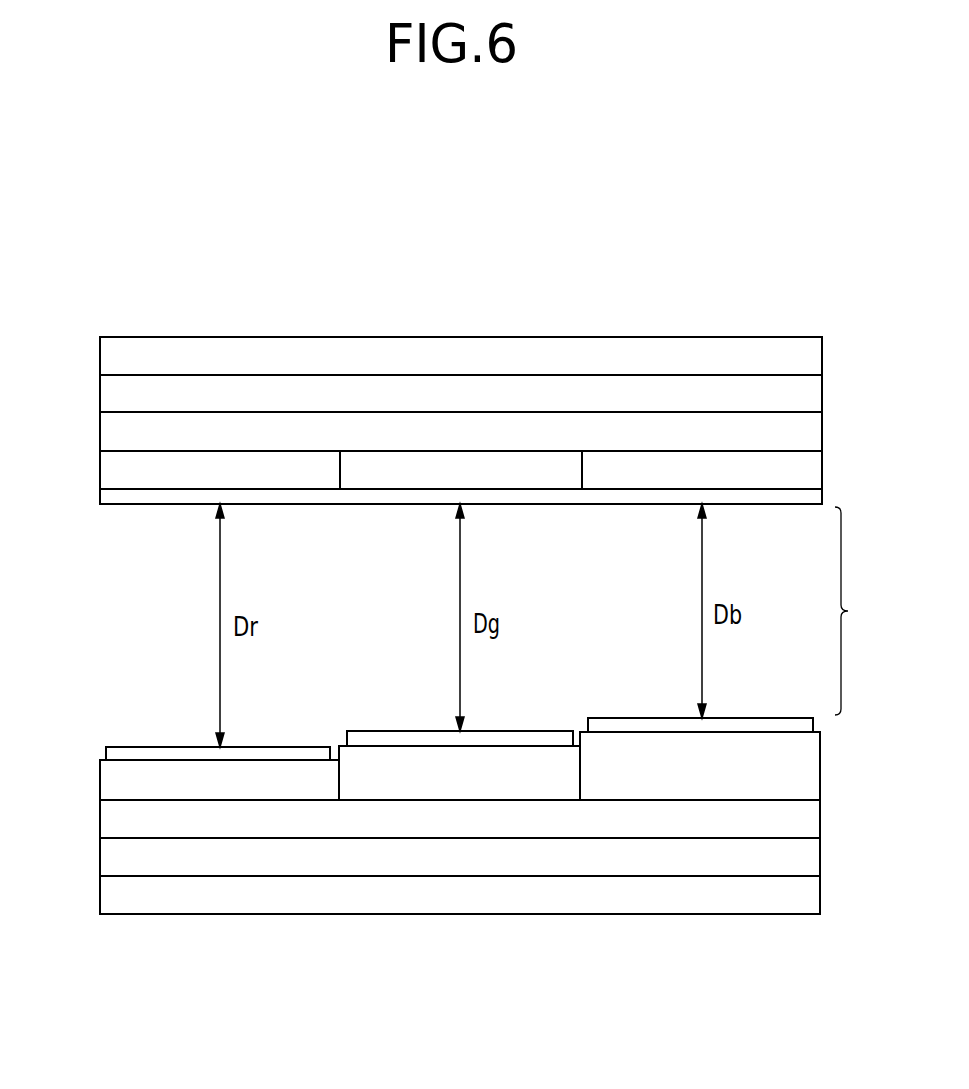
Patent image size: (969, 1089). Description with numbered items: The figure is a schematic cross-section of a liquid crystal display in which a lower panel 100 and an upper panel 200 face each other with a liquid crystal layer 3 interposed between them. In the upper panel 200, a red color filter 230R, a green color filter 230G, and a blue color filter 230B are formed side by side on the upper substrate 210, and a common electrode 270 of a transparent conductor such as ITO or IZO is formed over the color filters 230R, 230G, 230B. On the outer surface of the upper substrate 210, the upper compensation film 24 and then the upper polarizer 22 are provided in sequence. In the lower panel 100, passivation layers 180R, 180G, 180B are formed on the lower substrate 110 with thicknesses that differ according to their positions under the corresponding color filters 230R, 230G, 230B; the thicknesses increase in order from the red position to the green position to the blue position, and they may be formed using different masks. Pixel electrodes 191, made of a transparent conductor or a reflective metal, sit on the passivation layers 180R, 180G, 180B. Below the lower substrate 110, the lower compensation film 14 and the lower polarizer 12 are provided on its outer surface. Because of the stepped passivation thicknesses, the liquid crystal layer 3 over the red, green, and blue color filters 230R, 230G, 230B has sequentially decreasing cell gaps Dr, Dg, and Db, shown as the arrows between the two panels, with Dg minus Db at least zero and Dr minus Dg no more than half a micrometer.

The upper polarizer 22 is at (125, 358).
The upper compensation film 24 is at (125, 393).
The upper substrate 210 is at (125, 435).
The red color filter 230R is at (163, 470).
The green color filter 230G is at (405, 470).
The blue color filter 230B is at (647, 470).
The common electrode 270 is at (125, 498).
The upper panel 200 is at (835, 415).
The liquid crystal layer 3 is at (853, 611).
The lower panel 100 is at (835, 720).
The pixel electrode 191 is at (140, 752).
The red passivation layer 180R is at (280, 783).
The green passivation layer 180G is at (520, 770).
The blue passivation layer 180B is at (762, 755).
The lower substrate 110 is at (123, 817).
The lower compensation film 14 is at (123, 855).
The lower polarizer 12 is at (123, 892).